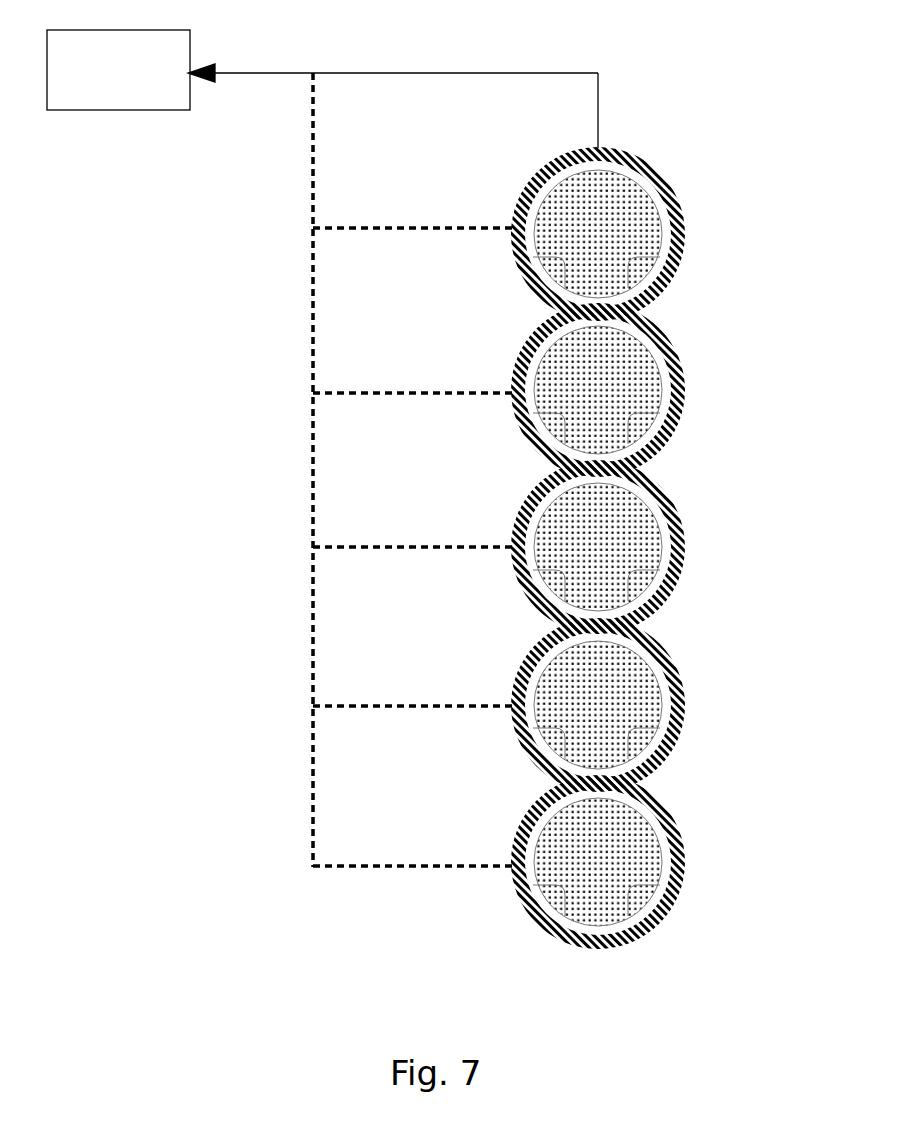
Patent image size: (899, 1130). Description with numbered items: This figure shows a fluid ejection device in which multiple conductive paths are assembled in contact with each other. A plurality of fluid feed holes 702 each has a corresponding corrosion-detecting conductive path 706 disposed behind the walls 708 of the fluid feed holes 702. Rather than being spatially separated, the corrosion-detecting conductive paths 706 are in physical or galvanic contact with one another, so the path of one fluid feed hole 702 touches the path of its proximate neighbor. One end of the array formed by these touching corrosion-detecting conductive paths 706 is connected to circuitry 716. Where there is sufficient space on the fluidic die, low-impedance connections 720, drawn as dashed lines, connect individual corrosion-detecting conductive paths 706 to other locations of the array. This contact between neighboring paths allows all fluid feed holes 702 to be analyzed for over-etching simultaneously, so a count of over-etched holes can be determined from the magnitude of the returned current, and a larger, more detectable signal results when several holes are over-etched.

The circuitry 716 is at (96, 100).
The low-impedance connections 720 is at (407, 227).
The fluid feed holes 702 is at (660, 257).
The corrosion-detecting conductive paths 706 is at (673, 202).
The walls 708 is at (465, 922).